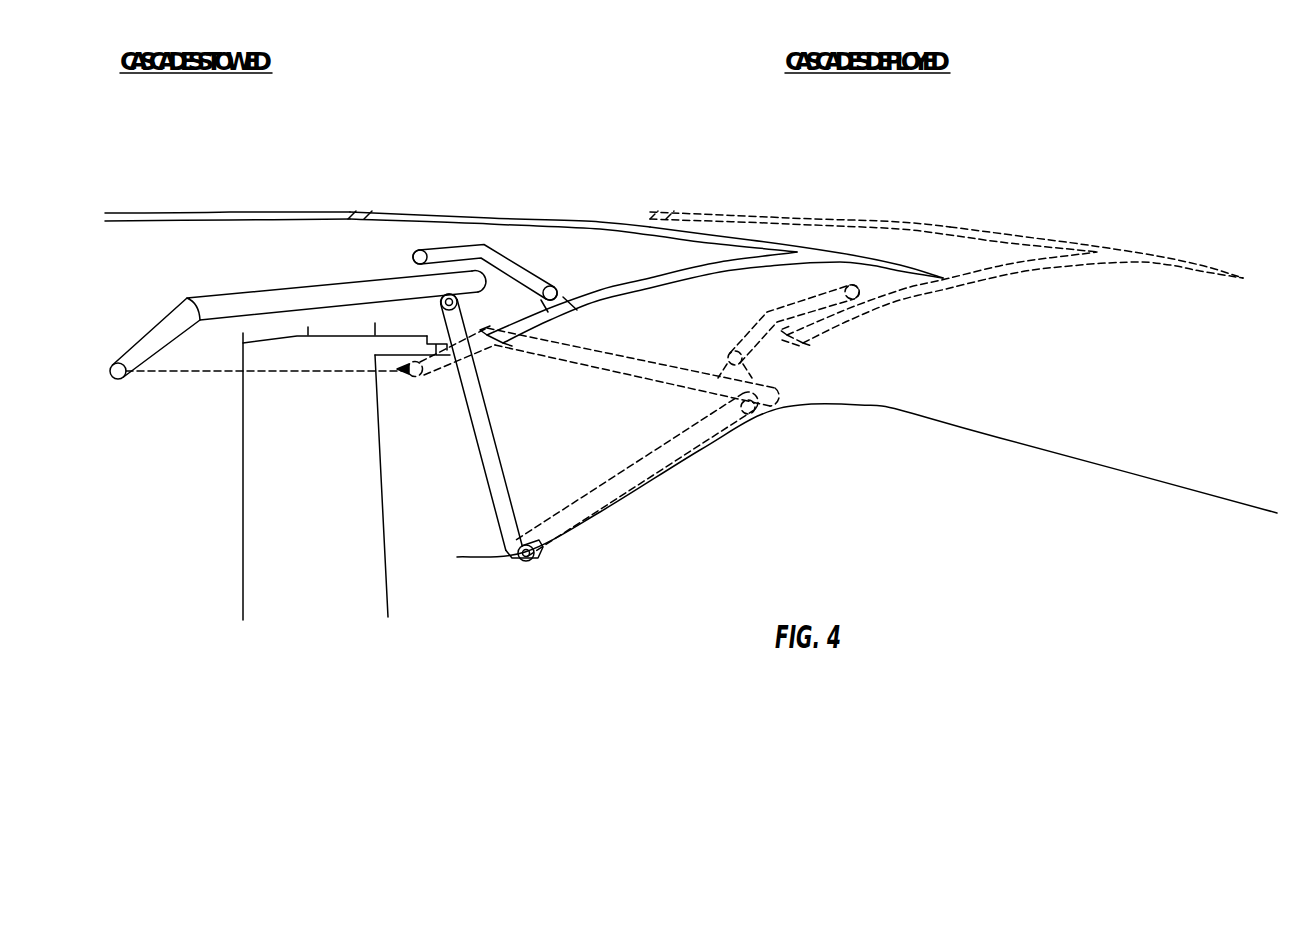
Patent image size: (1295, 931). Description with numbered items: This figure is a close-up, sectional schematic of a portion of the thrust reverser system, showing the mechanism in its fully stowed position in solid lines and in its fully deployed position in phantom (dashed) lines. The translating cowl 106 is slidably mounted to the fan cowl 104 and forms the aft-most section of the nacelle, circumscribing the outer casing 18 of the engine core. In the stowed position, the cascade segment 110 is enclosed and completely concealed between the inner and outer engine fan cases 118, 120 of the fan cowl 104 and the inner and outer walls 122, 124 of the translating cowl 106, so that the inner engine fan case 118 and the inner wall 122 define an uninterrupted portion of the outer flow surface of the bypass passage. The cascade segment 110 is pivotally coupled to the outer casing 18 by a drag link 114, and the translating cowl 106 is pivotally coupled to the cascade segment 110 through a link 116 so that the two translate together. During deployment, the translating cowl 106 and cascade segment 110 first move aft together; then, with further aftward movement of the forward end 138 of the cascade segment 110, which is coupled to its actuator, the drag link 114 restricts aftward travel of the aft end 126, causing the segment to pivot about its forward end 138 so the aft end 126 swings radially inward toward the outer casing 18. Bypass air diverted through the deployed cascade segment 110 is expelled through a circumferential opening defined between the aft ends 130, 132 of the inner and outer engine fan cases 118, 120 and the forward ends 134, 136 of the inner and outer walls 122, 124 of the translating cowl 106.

The outer casing 18 is at (1004, 436).
The fan cowl 104 is at (185, 211).
The translating cowl 106 is at (877, 258).
The cascade segment 110 is at (203, 295).
The drag link 114 is at (490, 496).
The link 116 is at (522, 272).
The inner engine fan case 118 is at (322, 335).
The outer engine fan case 120 is at (286, 213).
The inner wall 122 is at (578, 318).
The outer wall 124 is at (547, 214).
The aft end 126 is at (464, 278).
The aft end of inner engine fan case 130 is at (425, 333).
The aft end of outer engine fan case 132 is at (348, 223).
The forward end of inner wall 134 is at (805, 340).
The forward end of outer wall 136 is at (372, 211).
The forward end 138 is at (148, 333).